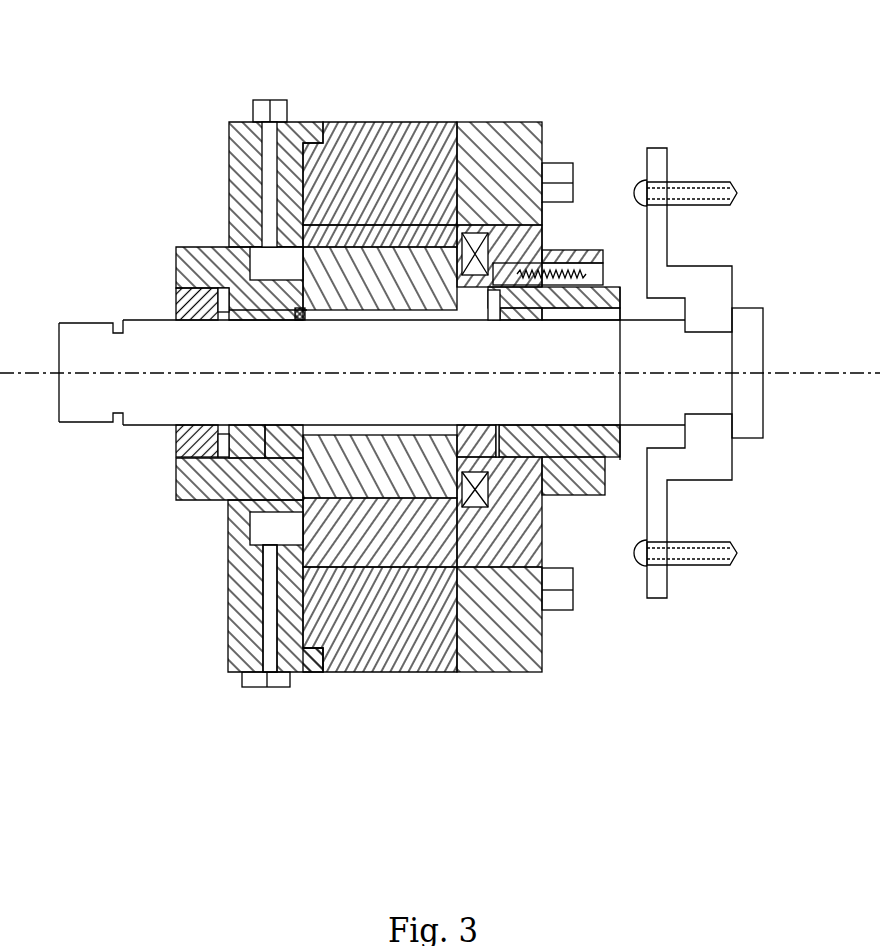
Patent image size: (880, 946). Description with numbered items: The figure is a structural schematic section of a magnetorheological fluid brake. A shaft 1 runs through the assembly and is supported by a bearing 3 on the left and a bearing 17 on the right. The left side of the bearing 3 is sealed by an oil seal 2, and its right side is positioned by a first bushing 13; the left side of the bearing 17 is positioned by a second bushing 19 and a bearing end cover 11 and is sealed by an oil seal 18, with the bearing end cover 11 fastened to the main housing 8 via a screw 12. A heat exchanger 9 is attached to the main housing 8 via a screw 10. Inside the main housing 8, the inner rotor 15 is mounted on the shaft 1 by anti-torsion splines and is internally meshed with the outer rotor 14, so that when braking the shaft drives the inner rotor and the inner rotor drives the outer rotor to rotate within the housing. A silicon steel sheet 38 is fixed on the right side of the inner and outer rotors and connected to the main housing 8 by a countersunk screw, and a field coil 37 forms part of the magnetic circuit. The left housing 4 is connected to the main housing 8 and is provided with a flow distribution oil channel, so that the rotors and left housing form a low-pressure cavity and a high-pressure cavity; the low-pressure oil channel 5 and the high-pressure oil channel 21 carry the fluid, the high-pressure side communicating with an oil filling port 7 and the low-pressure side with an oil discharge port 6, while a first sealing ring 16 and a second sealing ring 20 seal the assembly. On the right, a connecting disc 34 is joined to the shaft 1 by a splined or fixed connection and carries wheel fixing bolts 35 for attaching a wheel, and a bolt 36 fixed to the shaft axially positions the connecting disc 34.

The shaft 1 is at (95, 320).
The oil seal 2 is at (178, 290).
The bearing 3 is at (196, 252).
The left housing 4 is at (247, 217).
The low-pressure oil channel 5 is at (270, 588).
The oil discharge port 6 is at (265, 682).
The oil filling port 7 is at (268, 100).
The main housing 8 is at (350, 150).
The heat exchanger 9 is at (476, 145).
The screw for the heat exchanger 10 is at (558, 163).
The bearing end cover 11 is at (580, 472).
The screw for the bearing end cover 12 is at (562, 262).
The first bushing 13 is at (250, 430).
The outer rotor 14 is at (360, 238).
The inner rotor 15 is at (355, 488).
The first sealing ring 16 is at (300, 430).
The bearing 17 is at (522, 300).
The oil seal 18 is at (547, 438).
The second bushing for the shaft 19 is at (480, 436).
The second sealing ring 20 is at (325, 652).
The high-pressure oil channel 21 is at (272, 178).
The connecting disc 34 is at (665, 173).
The wheel fixing bolt 35 is at (710, 187).
The bolt 36 is at (747, 310).
The field coil 37 is at (480, 498).
The silicon steel sheet 38 is at (462, 545).